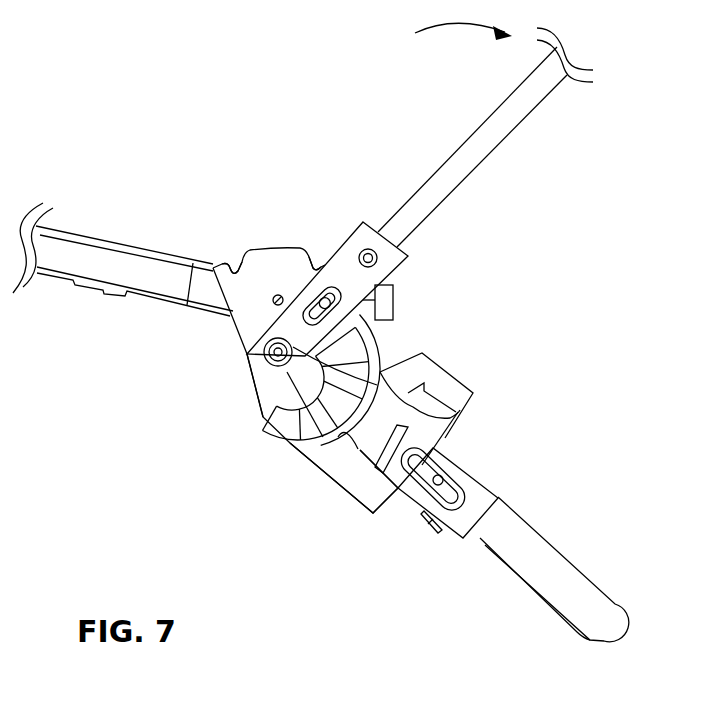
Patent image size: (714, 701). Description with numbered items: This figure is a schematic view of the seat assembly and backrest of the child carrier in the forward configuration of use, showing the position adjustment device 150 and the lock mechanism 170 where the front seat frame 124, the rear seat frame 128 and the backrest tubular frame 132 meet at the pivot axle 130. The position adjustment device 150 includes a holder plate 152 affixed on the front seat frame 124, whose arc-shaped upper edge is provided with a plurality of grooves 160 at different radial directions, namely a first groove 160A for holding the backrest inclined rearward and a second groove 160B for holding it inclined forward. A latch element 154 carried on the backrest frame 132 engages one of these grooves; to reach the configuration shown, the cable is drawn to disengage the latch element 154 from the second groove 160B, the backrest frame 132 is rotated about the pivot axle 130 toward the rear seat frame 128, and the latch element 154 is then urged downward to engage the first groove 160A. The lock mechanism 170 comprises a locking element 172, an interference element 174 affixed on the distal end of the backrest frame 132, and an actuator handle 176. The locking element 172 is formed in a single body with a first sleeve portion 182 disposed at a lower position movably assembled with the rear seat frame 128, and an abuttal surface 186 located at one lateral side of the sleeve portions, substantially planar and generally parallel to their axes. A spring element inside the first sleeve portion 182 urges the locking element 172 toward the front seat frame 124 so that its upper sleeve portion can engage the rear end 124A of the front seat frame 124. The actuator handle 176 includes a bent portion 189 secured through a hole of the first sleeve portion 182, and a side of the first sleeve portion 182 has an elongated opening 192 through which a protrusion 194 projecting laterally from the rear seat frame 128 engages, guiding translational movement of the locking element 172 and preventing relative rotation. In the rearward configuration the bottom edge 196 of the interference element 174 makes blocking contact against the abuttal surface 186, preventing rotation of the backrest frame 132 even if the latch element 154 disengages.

The front seat frame 124 is at (92, 263).
The rear end of the front seat frame 124A is at (387, 307).
The rear seat frame 128 is at (552, 557).
The pivot axle 130 is at (272, 353).
The backrest tubular frame 132 is at (465, 160).
The position adjustment device 150 is at (205, 340).
The holder plate 152 is at (278, 258).
The latch element 154 is at (358, 238).
The grooves 160 is at (293, 132).
The first groove 160A is at (316, 228).
The second groove 160B is at (222, 240).
The lock mechanism 170 is at (495, 332).
The locking element 172 is at (357, 487).
The interference element 174 is at (262, 405).
The actuator handle 176 is at (533, 593).
The first sleeve portion 182 is at (483, 493).
The abuttal surface 186 is at (310, 472).
The bent portion 189 is at (427, 523).
The elongated opening 192 is at (438, 460).
The protrusion 194 is at (455, 455).
The bottom edge 196 is at (247, 400).